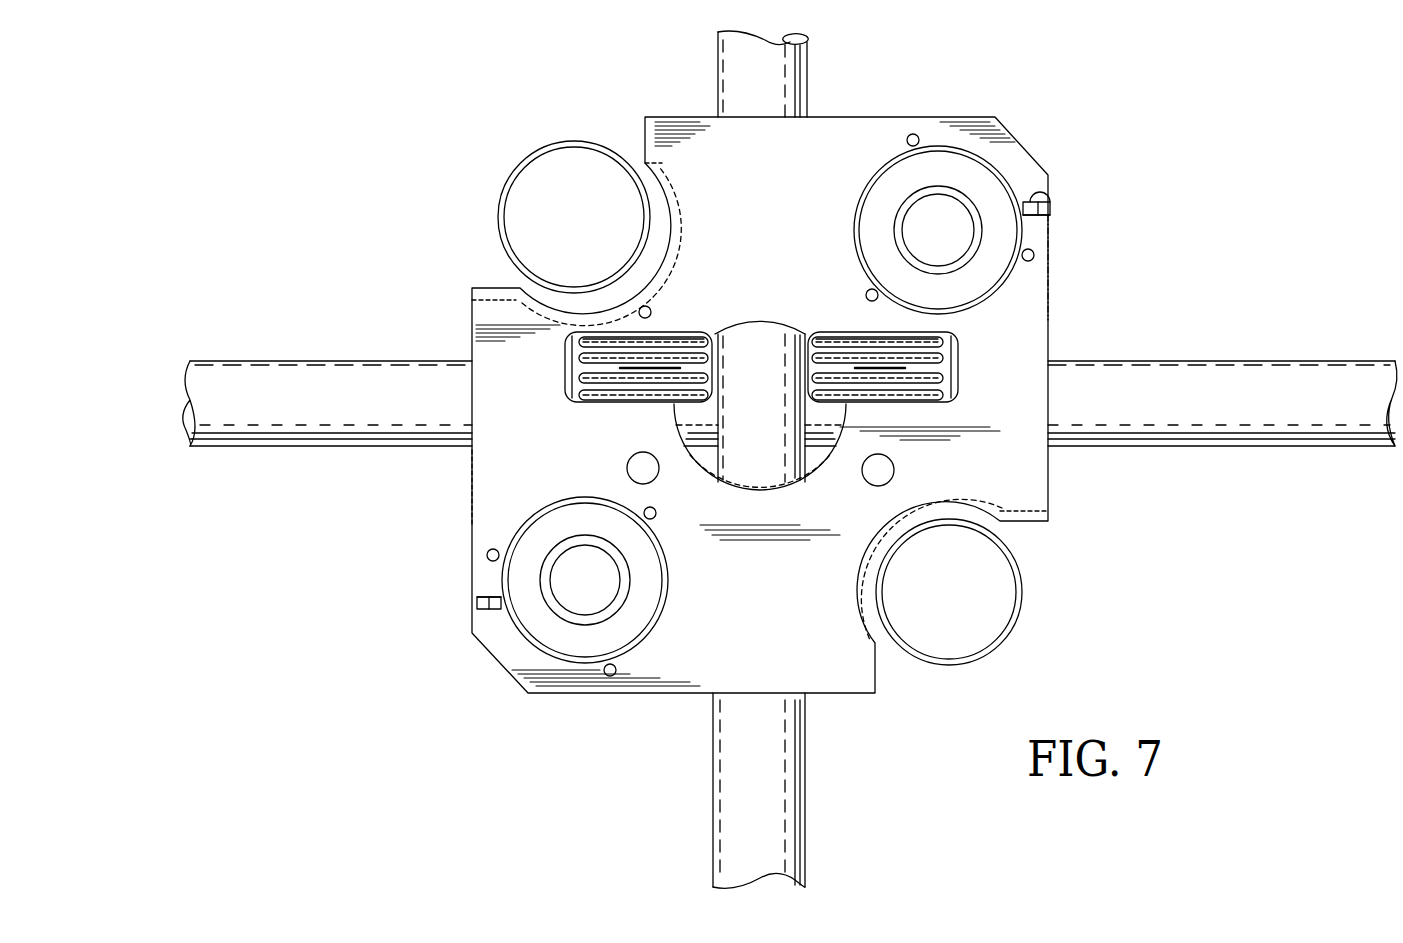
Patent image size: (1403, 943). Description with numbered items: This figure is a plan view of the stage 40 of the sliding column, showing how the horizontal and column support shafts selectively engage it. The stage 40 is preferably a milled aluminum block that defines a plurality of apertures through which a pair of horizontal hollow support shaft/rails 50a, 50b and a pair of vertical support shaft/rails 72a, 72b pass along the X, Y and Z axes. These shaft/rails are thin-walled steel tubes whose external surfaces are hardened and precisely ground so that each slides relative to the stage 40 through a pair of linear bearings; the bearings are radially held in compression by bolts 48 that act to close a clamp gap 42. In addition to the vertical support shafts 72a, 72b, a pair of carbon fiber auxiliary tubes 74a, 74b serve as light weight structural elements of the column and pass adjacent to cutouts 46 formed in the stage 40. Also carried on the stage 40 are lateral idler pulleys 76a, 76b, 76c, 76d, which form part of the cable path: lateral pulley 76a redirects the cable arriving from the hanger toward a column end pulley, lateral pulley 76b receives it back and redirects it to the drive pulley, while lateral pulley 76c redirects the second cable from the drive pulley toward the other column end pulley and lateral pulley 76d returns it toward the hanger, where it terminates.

The stage 40 is at (781, 572).
The clamp gap 42 is at (1042, 190).
The cutouts 46 is at (670, 216).
The bolts 48 is at (1050, 208).
The horizontal hollow support shaft/rail 50a is at (1190, 361).
The horizontal hollow support shaft/rail 50b is at (800, 459).
The vertical support shaft/rail 72a is at (666, 608).
The vertical support shaft/rail 72b is at (913, 230).
The carbon fiber tube 74a is at (1021, 605).
The carbon fiber tube 74b is at (580, 141).
The lateral pulley 76a is at (655, 402).
The lateral pulley 76b is at (915, 402).
The lateral pulley 76c is at (850, 340).
The lateral pulley 76d is at (686, 340).